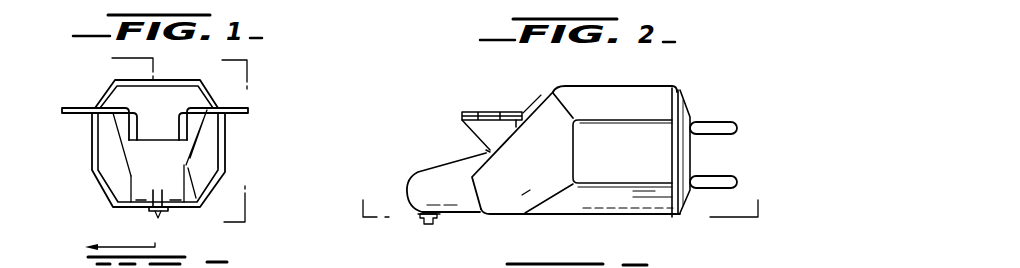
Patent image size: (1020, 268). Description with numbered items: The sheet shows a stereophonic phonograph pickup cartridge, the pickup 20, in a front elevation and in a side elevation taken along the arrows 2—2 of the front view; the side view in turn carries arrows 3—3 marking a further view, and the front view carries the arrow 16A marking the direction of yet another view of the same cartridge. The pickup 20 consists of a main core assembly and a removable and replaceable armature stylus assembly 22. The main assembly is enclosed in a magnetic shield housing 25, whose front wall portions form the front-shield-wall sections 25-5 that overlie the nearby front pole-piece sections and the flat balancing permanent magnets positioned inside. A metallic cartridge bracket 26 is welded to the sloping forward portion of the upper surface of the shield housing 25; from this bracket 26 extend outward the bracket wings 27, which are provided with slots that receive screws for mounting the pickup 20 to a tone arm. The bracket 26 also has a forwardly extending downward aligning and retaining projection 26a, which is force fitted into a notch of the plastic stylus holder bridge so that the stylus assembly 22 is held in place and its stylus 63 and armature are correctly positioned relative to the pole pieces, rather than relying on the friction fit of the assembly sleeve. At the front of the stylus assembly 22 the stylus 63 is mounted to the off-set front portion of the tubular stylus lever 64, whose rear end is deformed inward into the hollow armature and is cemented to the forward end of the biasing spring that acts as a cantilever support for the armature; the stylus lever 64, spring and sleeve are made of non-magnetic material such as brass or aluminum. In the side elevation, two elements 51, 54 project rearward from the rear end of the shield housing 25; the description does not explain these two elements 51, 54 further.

In FIG. 1, the section arrows 2— 2 is at (221, 143).
In FIG. 2, the section arrows 3— 3 is at (561, 197).
In FIG. 1, the view arrow 16A is at (113, 65).
In FIG. 1, the stereophonic pickup 20 is at (76, 143).
In FIG. 2, the stereophonic pickup 20 is at (683, 78).
In FIG. 1, the armature stylus assembly 22 is at (150, 166).
In FIG. 2, the armature stylus assembly 22 is at (416, 172).
In FIG. 1, the shield housing 25 is at (210, 154).
In FIG. 2, the shield housing 25 is at (635, 166).
In FIG. 1, the front-shield-wall sections 25-5 is at (104, 150).
In FIG. 2, the front-shield-wall sections 25-5 is at (522, 195).
In FIG. 1, the bracket 26 is at (143, 120).
In FIG. 2, the bracket 26 is at (468, 129).
In FIG. 2, the aligning and retaining projection 26a is at (486, 151).
In FIG. 1, the bracket wings 27 is at (88, 90).
In FIG. 2, the bracket wings 27 is at (478, 112).
In FIG. 2, the terminal pin 51 is at (731, 113).
In FIG. 2, the terminal pin 54 is at (733, 164).
In FIG. 1, the stylus 63 is at (160, 218).
In FIG. 2, the stylus 63 is at (426, 227).
In FIG. 1, the stylus lever 64 is at (152, 208).
In FIG. 2, the stylus lever 64 is at (436, 217).